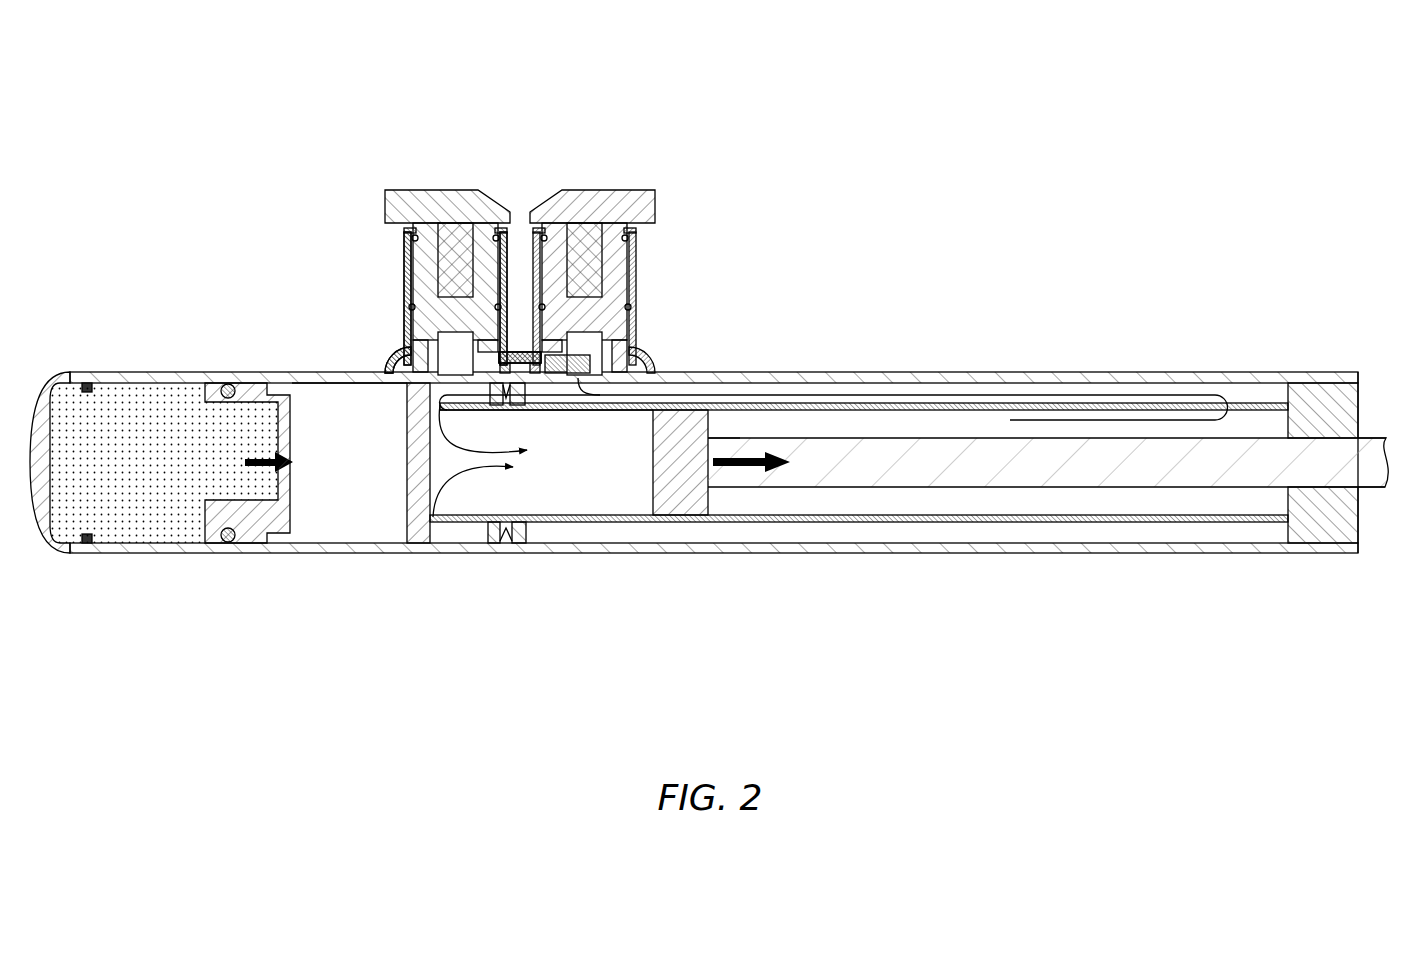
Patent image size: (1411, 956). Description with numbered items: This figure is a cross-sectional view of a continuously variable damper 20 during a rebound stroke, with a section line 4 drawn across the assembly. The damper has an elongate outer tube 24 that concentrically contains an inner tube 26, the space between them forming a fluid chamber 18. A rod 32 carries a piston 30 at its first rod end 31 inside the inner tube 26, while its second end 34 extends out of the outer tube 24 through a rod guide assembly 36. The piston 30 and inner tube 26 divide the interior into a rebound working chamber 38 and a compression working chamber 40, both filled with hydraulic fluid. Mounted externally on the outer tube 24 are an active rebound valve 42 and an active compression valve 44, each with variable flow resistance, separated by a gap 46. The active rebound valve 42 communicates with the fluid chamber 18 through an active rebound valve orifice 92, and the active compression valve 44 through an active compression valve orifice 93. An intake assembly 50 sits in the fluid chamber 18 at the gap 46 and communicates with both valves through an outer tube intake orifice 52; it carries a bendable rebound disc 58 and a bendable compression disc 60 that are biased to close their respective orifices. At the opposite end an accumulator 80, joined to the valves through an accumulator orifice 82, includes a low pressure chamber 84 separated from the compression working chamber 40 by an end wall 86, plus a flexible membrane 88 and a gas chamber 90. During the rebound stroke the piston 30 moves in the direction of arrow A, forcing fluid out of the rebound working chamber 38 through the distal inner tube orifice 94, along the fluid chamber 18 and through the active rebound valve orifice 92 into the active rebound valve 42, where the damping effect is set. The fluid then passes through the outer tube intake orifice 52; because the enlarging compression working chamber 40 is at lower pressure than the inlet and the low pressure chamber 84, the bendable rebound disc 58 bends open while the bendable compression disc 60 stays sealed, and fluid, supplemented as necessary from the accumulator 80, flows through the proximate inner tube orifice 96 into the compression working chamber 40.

The section line 4- 4 is at (520, 190).
The fluid chamber 18 is at (965, 383).
The continuously variable damper 20 is at (1075, 282).
The outer tube 24 is at (1125, 380).
The inner tube 26 is at (852, 405).
The piston 30 is at (680, 492).
The first rod end 31 is at (736, 438).
The rod 32 is at (1368, 440).
The second end 34 is at (1368, 487).
The rod guide assembly 36 is at (1322, 527).
The rebound working chamber 38 is at (1112, 490).
The compression working chamber 40 is at (623, 476).
The active rebound valve 42 is at (617, 190).
The active compression valve 44 is at (408, 190).
The gap 46 is at (519, 343).
The intake assembly 50 is at (501, 562).
The outer tube intake orifice 52 is at (497, 338).
The bendable rebound disc 58 is at (484, 390).
The bendable compression disc 60 is at (527, 394).
The accumulator 80 is at (237, 565).
The accumulator orifice 82 is at (405, 370).
The low pressure chamber 84 is at (363, 476).
The end wall 86 is at (378, 543).
The flexible membrane 88 is at (258, 543).
The gas chamber 90 is at (156, 473).
The active rebound valve orifice 92 is at (578, 382).
The active compression valve orifice 93 is at (455, 380).
The distal inner tube orifice 94 is at (1215, 400).
The proximate inner tube orifice 96 is at (437, 543).
The arrow A is at (750, 477).